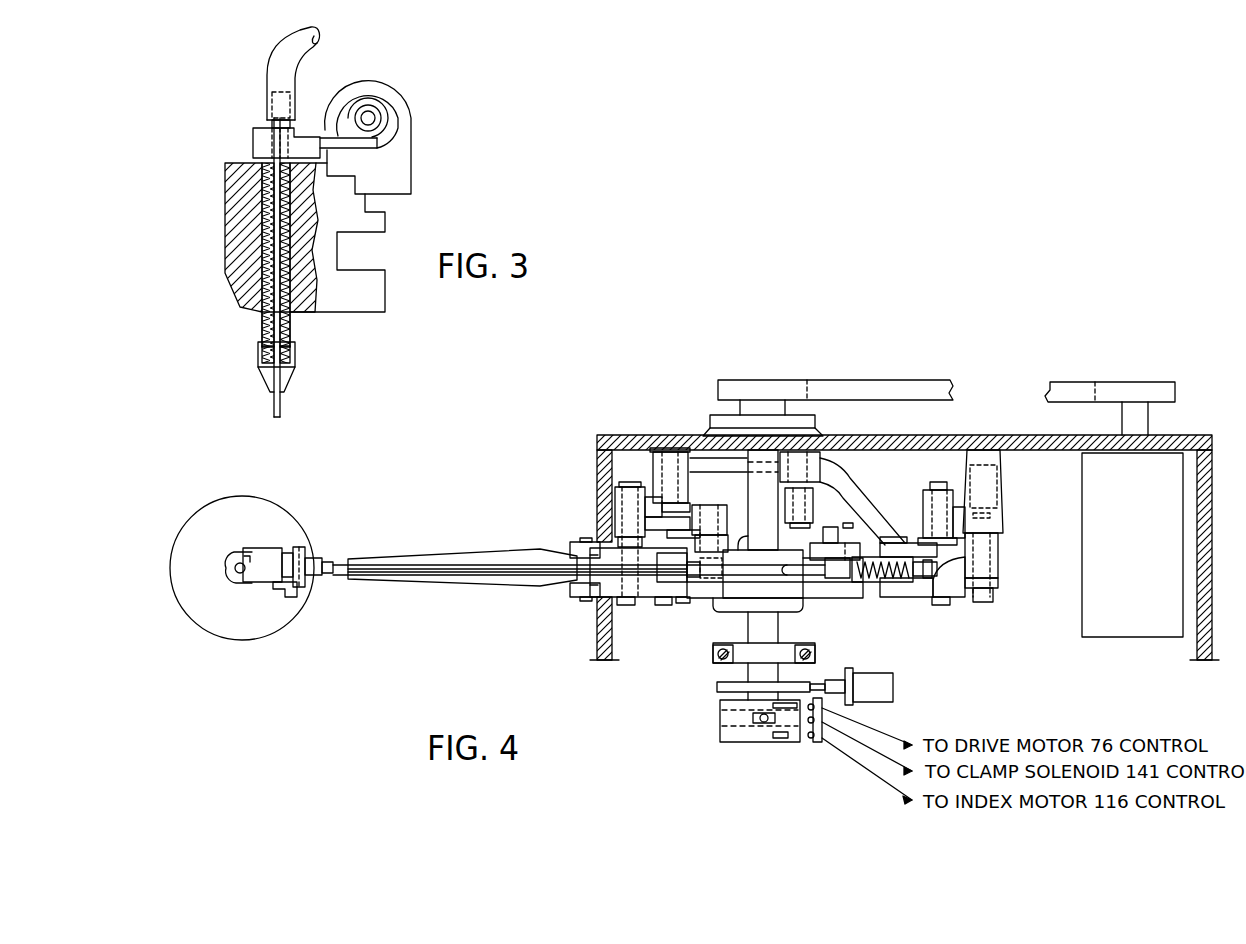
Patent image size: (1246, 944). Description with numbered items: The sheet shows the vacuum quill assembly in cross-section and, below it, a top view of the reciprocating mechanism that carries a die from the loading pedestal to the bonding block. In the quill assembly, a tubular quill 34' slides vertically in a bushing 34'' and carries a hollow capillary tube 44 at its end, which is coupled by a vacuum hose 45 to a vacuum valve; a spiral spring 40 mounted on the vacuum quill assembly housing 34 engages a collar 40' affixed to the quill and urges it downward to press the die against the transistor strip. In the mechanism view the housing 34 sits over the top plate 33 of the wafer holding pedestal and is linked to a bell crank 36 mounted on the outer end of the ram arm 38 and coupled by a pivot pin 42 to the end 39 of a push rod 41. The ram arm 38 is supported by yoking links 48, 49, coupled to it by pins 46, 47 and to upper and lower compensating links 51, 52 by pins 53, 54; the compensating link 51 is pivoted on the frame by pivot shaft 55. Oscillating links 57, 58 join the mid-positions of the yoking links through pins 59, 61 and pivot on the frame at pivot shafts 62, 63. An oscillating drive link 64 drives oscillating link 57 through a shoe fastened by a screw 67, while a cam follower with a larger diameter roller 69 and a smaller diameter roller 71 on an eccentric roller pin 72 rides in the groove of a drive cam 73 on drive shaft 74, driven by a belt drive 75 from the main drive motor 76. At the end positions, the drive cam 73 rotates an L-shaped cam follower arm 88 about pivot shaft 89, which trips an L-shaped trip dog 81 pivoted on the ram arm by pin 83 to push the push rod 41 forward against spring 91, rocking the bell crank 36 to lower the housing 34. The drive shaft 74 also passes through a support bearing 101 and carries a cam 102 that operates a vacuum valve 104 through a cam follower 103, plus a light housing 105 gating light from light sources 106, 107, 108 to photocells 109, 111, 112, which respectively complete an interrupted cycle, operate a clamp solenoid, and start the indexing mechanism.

In FIG. 3, the vacuum hose 45 is at (268, 54).
In FIG. 4, the vacuum hose 45 is at (245, 556).
In FIG. 3, the spiral spring 40 is at (376, 130).
In FIG. 3, the collar 40' is at (297, 137).
In FIG. 3, the vacuum quill assembly housing 34 is at (287, 237).
In FIG. 4, the vacuum quill assembly housing 34 is at (260, 579).
In FIG. 3, the tubular quill 34' is at (241, 255).
In FIG. 3, the bushing 34'' is at (257, 329).
In FIG. 3, the capillary tube 44 is at (274, 405).
In FIG. 4, the top plate 33 is at (272, 515).
In FIG. 4, the pivot pin 42 is at (299, 549).
In FIG. 4, the end of push rod 39 is at (317, 560).
In FIG. 4, the bell crank 36 is at (286, 592).
In FIG. 4, the ram arm 38 is at (486, 558).
In FIG. 4, the push rod 41 is at (428, 562).
In FIG. 4, the yoking link 48 is at (577, 543).
In FIG. 4, the pin 46 is at (578, 597).
In FIG. 4, the screw 67 is at (638, 542).
In FIG. 4, the pin 59 is at (641, 605).
In FIG. 4, the pin 53 is at (664, 605).
In FIG. 4, the upper compensating link 51 is at (686, 601).
In FIG. 4, the eccentric roller pin 72 is at (690, 575).
In FIG. 4, the smaller diameter roller 71 is at (721, 568).
In FIG. 4, the drive cam 73 is at (757, 550).
In FIG. 4, the larger diameter roller 69 is at (740, 538).
In FIG. 4, the pivot shaft 89 is at (792, 508).
In FIG. 4, the drive shaft 74 is at (757, 486).
In FIG. 4, the pivot shaft 62 is at (685, 413).
In FIG. 4, the oscillating link 57 is at (656, 495).
In FIG. 4, the oscillating drive link 64 is at (722, 507).
In FIG. 4, the lower compensating link 52 is at (863, 500).
In FIG. 4, the cam follower arm 88 is at (822, 497).
In FIG. 4, the pin 83 is at (826, 549).
In FIG. 4, the pin 47 is at (880, 536).
In FIG. 4, the trip dog 81 is at (846, 579).
In FIG. 4, the spring 91 is at (903, 576).
In FIG. 4, the yoking link 49 is at (958, 597).
In FIG. 4, the pivot shaft 55 is at (998, 585).
In FIG. 4, the pin 54 is at (996, 596).
In FIG. 4, the pin 61 is at (945, 606).
In FIG. 4, the oscillating link 58 is at (925, 492).
In FIG. 4, the pivot shaft 63 is at (1001, 497).
In FIG. 4, the belt drive 75 is at (910, 380).
In FIG. 4, the main drive motor 76 is at (1142, 506).
In FIG. 4, the support bearing 101 is at (712, 648).
In FIG. 4, the cam 102 is at (717, 688).
In FIG. 4, the cam follower 103 is at (823, 681).
In FIG. 4, the vacuum valve 104 is at (870, 673).
In FIG. 4, the light housing 105 is at (726, 746).
In FIG. 4, the light source 106 is at (722, 714).
In FIG. 4, the light source 107 is at (722, 736).
In FIG. 4, the light source 108 is at (762, 744).
In FIG. 4, the photocell 109 is at (824, 712).
In FIG. 4, the photocell 111 is at (812, 745).
In FIG. 4, the photocell 112 is at (820, 743).